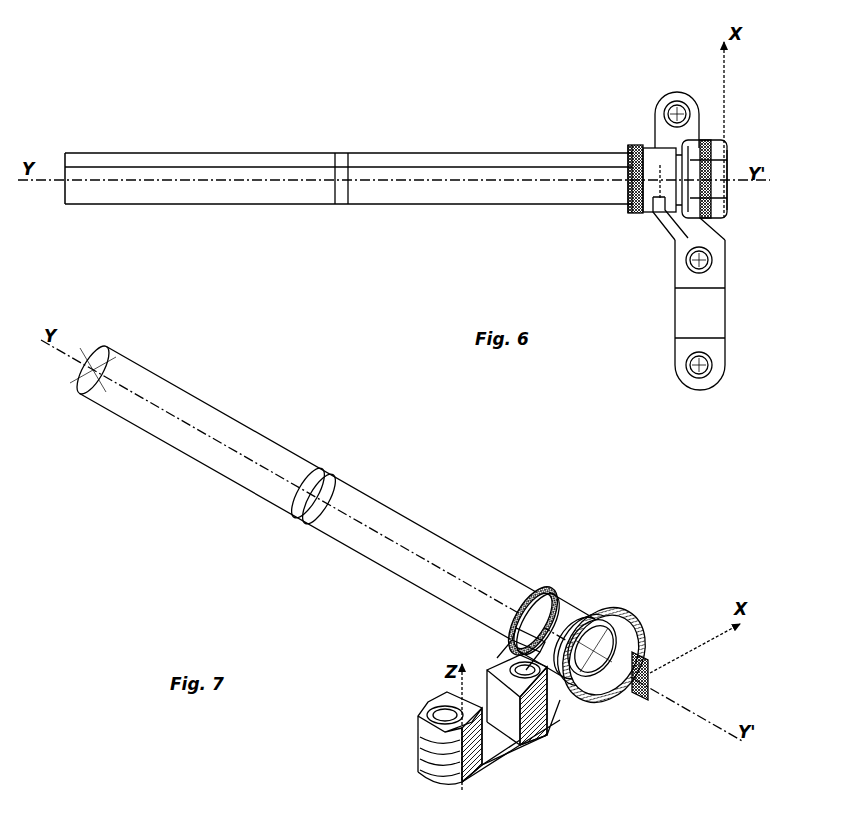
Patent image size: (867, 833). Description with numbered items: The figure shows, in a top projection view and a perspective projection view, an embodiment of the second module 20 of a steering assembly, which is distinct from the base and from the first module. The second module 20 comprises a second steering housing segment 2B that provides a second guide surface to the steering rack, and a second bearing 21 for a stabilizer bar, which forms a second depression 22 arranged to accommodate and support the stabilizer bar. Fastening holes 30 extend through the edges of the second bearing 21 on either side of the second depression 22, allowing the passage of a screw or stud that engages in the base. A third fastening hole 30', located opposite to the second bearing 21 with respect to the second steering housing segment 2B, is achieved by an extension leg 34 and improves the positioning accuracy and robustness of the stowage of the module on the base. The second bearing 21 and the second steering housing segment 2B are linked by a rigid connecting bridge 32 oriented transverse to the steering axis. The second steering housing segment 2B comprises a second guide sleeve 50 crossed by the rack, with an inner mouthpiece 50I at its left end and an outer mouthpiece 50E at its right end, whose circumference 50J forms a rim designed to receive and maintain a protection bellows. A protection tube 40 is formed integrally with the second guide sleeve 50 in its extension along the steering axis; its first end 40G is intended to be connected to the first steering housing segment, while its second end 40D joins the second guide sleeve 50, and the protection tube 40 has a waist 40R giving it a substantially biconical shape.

In FIG. 6, the second module 20 is at (505, 100).
In FIG. 7, the second module 20 is at (610, 508).
In FIG. 6, the second bearing 21 is at (678, 282).
In FIG. 7, the second bearing 21 is at (472, 770).
In FIG. 6, the second depression 22 is at (705, 322).
In FIG. 7, the second depression 22 is at (530, 738).
In FIG. 6, the second steering housing segment 2B is at (650, 153).
In FIG. 7, the second steering housing segment 2B is at (592, 615).
In FIG. 6, the fastening holes 30 is at (731, 316).
In FIG. 7, the fastening holes 30 is at (455, 708).
In FIG. 6, the third fastening hole 30' is at (663, 91).
In FIG. 6, the connecting bridge 32 is at (660, 228).
In FIG. 7, the connecting bridge 32 is at (505, 648).
In FIG. 6, the extension leg 34 is at (681, 100).
In FIG. 7, the extension leg 34 is at (634, 700).
In FIG. 6, the protection tube 40 is at (380, 160).
In FIG. 7, the protection tube 40 is at (350, 500).
In FIG. 6, the second end of the protection tube 40D is at (622, 143).
In FIG. 7, the second end of the protection tube 40D is at (523, 586).
In FIG. 6, the first end of the protection tube 40G is at (52, 197).
In FIG. 7, the first end of the protection tube 40G is at (92, 343).
In FIG. 6, the waist 40R is at (341, 150).
In FIG. 7, the waist 40R is at (325, 465).
In FIG. 6, the second guide sleeve 50 is at (650, 130).
In FIG. 7, the second guide sleeve 50 is at (585, 605).
In FIG. 6, the outer mouthpiece 50E is at (740, 197).
In FIG. 7, the outer mouthpiece 50E is at (668, 617).
In FIG. 6, the inner mouthpiece 50I is at (628, 200).
In FIG. 7, the inner mouthpiece 50I is at (540, 585).
In FIG. 6, the circumference of the outer mouthpiece 50J is at (716, 147).
In FIG. 7, the circumference of the outer mouthpiece 50J is at (612, 625).